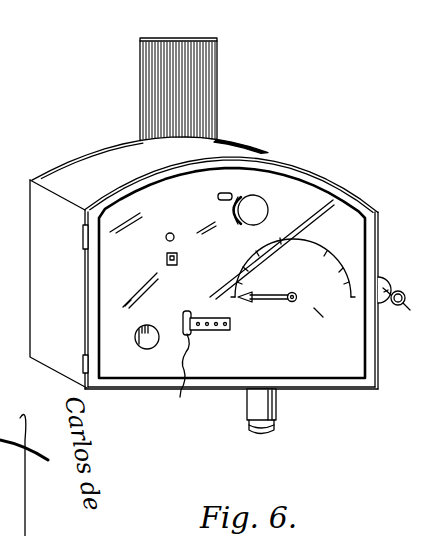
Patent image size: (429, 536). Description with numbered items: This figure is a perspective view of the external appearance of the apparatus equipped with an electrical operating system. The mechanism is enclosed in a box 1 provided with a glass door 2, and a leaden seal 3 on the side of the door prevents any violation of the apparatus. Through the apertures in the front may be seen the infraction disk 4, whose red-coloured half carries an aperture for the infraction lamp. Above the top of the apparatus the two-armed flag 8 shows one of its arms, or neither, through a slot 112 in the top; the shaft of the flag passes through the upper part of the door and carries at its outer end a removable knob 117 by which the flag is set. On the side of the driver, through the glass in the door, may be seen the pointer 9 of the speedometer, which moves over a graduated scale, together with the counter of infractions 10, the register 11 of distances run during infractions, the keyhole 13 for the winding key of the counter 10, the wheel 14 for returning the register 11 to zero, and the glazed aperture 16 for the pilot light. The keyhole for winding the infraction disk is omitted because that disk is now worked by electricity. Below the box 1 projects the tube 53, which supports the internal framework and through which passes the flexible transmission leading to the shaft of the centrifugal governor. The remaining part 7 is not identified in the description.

The cabinet casing 7 is at (40, 280).
The slot 112 is at (87, 156).
The two-armed flag 8 is at (210, 87).
The removable knob 117 is at (256, 200).
The box 1 is at (245, 265).
The glass door 2 is at (279, 246).
The leaden seal 3 is at (401, 290).
The pointer 9 is at (267, 306).
The keyhole 13 is at (173, 234).
The counter of infractions 10 is at (170, 265).
The glazed aperture 16 is at (159, 343).
The register of distances run during infractions 11 is at (218, 333).
The wheel 14 is at (179, 373).
The infraction disk 4 is at (131, 366).
The tube 53 is at (277, 409).